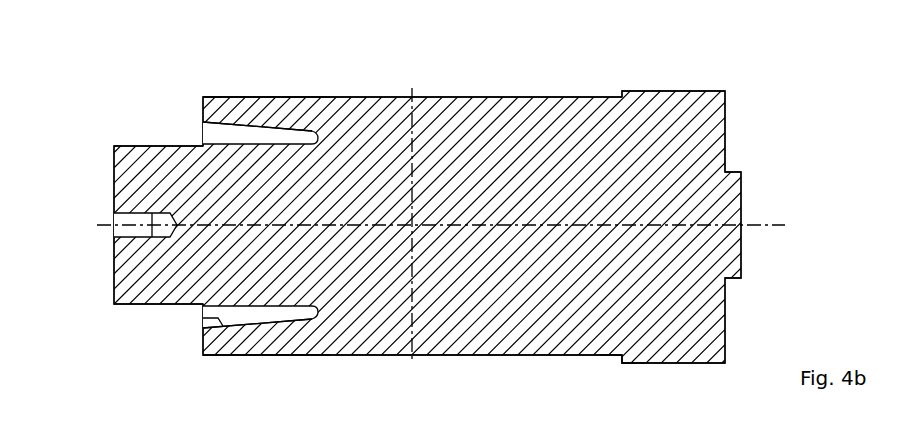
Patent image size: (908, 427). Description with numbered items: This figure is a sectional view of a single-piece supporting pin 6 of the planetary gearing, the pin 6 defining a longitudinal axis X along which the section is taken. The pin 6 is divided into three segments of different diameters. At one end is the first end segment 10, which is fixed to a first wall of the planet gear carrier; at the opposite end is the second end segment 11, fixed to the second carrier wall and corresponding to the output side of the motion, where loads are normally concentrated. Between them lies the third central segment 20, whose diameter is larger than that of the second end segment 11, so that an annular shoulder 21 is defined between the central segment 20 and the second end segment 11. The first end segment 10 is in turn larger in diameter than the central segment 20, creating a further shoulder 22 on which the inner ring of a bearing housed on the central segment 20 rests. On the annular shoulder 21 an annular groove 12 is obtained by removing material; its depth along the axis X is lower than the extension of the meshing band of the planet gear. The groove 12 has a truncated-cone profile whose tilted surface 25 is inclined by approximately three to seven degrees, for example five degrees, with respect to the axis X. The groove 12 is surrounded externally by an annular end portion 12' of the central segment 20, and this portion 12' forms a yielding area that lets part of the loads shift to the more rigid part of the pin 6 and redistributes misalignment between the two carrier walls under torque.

The supporting pin 6 is at (768, 101).
The first end segment 10 is at (685, 130).
The second end segment 11 is at (155, 167).
The annular groove 12 is at (260, 240).
The annular end portion 12' is at (271, 200).
The third central segment 20 is at (517, 143).
The annular shoulder 21 is at (203, 345).
The further shoulder 22 is at (617, 360).
The tilted surface 25 is at (235, 133).
The longitudinal axis X is at (767, 235).